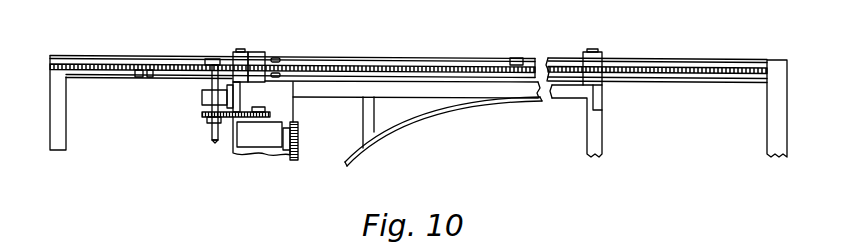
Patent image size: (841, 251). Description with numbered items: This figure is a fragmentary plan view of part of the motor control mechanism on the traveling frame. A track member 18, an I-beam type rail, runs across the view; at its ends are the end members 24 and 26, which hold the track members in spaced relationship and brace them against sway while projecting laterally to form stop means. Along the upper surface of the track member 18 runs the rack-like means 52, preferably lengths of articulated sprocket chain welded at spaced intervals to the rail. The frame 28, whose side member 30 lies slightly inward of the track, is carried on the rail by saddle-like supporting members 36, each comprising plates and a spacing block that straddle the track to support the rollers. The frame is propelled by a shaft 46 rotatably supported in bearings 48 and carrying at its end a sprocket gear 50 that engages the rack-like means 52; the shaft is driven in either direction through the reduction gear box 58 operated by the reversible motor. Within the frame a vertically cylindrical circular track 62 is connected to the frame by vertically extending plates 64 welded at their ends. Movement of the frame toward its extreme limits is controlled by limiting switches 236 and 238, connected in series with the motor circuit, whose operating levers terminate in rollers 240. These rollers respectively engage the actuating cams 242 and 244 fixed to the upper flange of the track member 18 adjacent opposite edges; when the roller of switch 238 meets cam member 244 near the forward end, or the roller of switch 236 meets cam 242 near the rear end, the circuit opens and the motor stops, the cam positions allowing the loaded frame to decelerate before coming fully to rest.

The track member 18 is at (643, 64).
The end member 24 is at (63, 138).
The end member 26 is at (770, 127).
The frame 28 is at (606, 143).
The side member 30 is at (425, 93).
The saddle-like supporting member 36 is at (238, 58).
The shaft 46 is at (210, 133).
The bearing 48 is at (203, 98).
The sprocket gear 50 is at (210, 58).
The rack-like means 52 is at (367, 64).
The reduction gear box 58 is at (248, 137).
The circular track 62 is at (408, 128).
The vertically extending plate 64 is at (365, 122).
The limit switch 236 is at (260, 57).
The limit switch 238 is at (257, 77).
The roller 240 is at (276, 74).
The actuating cam 242 is at (513, 59).
The cam member 244 is at (140, 78).